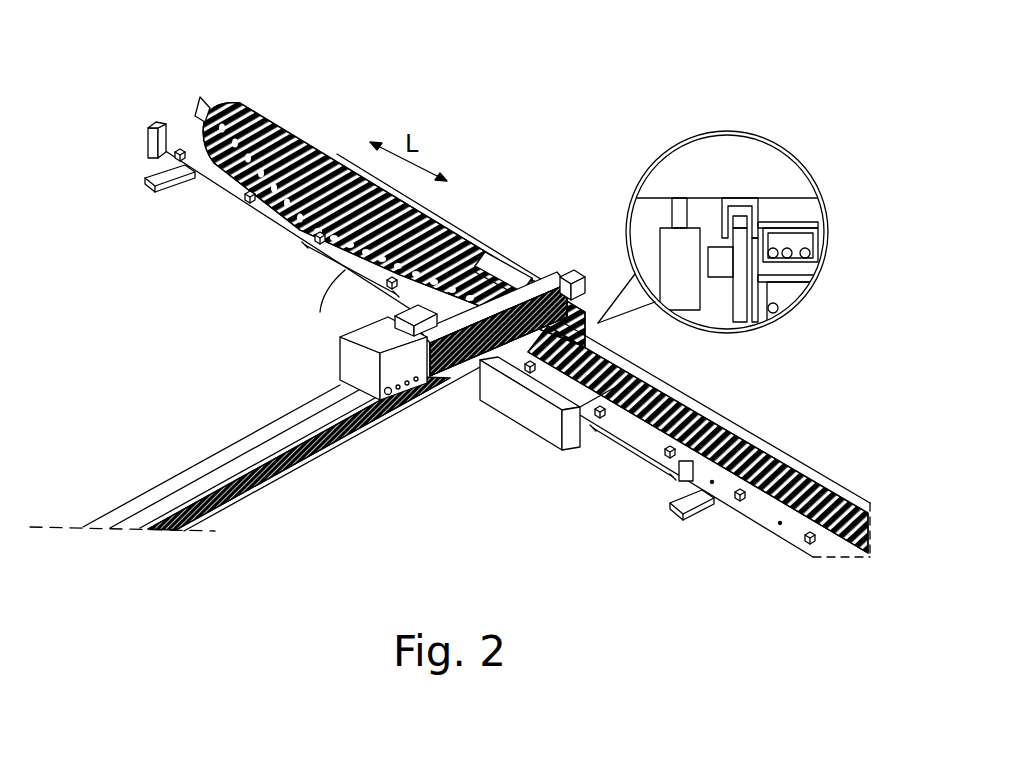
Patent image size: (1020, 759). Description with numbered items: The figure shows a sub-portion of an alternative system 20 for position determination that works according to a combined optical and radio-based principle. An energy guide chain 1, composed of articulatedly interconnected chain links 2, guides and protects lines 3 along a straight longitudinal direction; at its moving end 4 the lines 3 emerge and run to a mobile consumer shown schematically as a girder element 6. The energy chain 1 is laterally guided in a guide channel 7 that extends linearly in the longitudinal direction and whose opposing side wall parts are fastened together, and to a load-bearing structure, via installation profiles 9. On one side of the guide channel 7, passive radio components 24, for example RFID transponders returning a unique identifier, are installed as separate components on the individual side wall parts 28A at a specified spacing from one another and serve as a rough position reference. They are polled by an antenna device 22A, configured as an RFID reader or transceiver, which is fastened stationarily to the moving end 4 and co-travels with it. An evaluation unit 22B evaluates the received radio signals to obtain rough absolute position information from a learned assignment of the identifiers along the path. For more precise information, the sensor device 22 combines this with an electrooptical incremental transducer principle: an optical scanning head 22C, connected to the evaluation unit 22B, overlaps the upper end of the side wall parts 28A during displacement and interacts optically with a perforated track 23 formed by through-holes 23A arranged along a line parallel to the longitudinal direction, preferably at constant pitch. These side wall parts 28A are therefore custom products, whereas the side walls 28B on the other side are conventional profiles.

The energy guide chain 1 is at (264, 84).
The chain links 2 is at (302, 140).
The lines 3 is at (578, 272).
The moving end 4 is at (500, 268).
The girder element 6 is at (258, 452).
The guide channel 7 is at (148, 152).
The installation profiles 9 is at (150, 186).
The system 20 is at (166, 332).
The sensor device 22 is at (575, 512).
The antenna device 22A is at (545, 430).
The evaluation unit 22B is at (355, 373).
The optical scanning head 22C is at (498, 360).
The perforated track 23 is at (858, 564).
The through-holes 23A is at (727, 226).
The radio components 24 is at (244, 204).
The side wall parts 28A is at (773, 520).
The side walls 28B is at (812, 488).